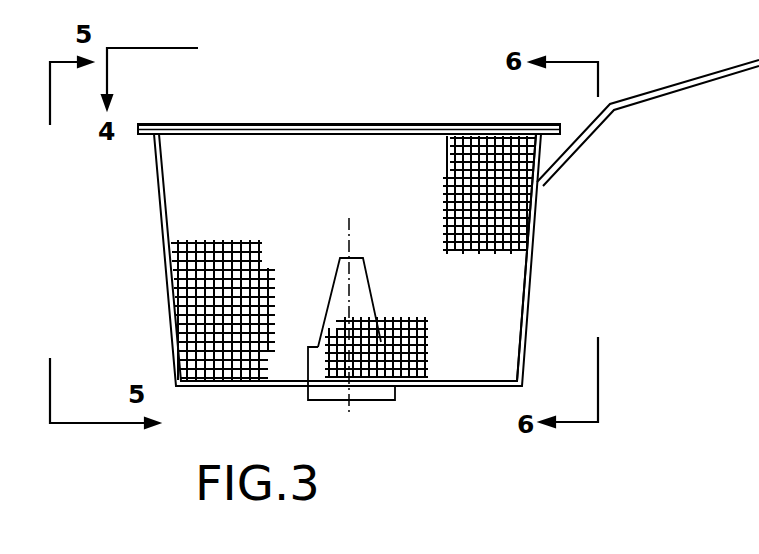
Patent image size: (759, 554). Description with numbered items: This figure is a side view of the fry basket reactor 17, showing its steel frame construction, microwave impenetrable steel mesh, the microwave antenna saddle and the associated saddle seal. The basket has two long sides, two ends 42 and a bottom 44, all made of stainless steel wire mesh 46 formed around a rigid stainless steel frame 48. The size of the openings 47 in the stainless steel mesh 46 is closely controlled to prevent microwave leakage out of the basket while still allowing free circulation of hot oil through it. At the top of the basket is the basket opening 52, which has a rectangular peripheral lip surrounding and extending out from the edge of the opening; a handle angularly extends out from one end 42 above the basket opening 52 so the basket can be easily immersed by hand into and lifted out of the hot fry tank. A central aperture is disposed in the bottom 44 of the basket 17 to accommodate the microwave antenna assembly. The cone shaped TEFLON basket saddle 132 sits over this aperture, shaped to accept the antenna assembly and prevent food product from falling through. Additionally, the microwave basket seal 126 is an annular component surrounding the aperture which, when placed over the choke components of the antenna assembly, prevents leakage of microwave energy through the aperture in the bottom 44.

The fry basket reactor 17 is at (196, 164).
The basket opening 52 is at (353, 123).
The stainless steel wire mesh 46 is at (215, 270).
The openings 47 is at (262, 268).
The ends 42 is at (528, 257).
The basket saddle 132 is at (357, 273).
The microwave basket seal 126 is at (325, 393).
The bottom 44 is at (449, 386).
The rigid stainless steel frame 48 is at (527, 348).